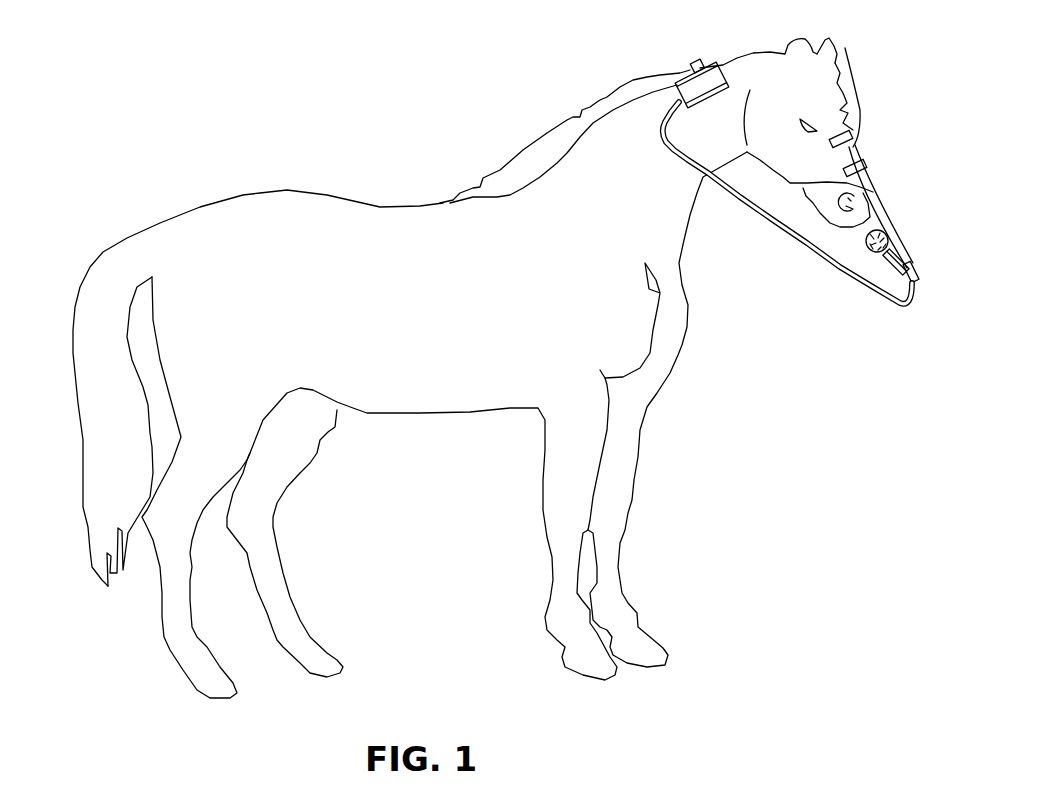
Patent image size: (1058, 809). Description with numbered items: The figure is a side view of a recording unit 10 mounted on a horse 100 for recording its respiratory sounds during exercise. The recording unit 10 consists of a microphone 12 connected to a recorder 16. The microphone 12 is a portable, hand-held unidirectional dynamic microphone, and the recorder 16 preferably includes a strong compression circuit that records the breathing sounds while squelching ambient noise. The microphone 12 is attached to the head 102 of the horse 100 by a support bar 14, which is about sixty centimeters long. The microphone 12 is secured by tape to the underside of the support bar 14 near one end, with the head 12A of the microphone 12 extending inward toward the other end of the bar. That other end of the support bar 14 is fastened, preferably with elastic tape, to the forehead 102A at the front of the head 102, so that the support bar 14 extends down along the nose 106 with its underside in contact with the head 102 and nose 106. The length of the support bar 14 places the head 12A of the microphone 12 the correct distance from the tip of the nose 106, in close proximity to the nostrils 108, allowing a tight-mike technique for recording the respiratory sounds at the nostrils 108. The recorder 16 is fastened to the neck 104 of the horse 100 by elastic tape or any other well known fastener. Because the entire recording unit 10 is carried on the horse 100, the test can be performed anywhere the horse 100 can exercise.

The recording unit 10 is at (753, 296).
The microphone 12 is at (890, 272).
The head of the microphone 12A is at (868, 256).
The support bar 14 is at (855, 148).
The recorder 16 is at (684, 70).
The horse 100 is at (338, 197).
The head 102 is at (791, 60).
The forehead 102A is at (845, 48).
The neck 104 is at (680, 213).
The nose 106 is at (793, 183).
The nostrils 108 is at (847, 210).